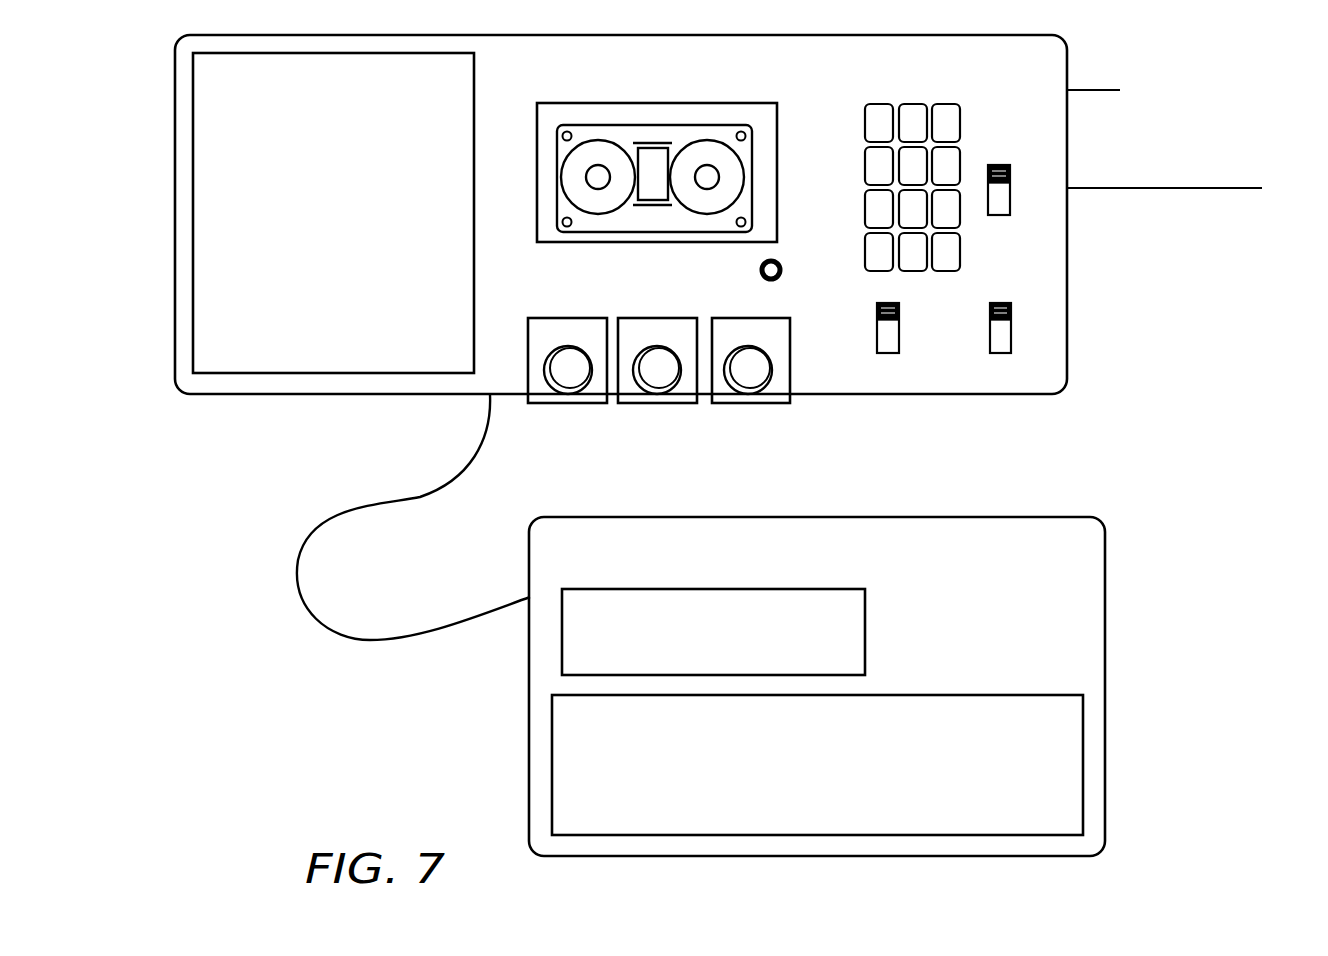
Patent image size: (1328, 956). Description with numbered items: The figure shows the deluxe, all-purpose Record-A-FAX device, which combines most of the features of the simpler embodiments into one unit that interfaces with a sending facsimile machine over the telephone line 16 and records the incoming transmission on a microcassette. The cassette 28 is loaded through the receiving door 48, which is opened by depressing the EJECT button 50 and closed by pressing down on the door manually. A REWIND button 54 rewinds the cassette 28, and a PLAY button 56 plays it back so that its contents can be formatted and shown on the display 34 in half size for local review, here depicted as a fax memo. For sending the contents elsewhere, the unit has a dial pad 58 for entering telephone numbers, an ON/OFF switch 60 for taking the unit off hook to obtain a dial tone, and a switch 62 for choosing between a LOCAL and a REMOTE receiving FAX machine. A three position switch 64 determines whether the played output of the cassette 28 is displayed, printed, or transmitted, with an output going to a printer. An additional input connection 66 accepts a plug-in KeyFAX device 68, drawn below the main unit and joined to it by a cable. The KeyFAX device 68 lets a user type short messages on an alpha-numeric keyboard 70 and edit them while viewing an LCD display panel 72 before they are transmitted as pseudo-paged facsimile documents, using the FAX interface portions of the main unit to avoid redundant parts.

The telephone line 16 is at (1100, 90).
The cassette 28 is at (748, 205).
The display 34 is at (307, 352).
The receiving door 48 is at (775, 152).
The EJECT button 50 is at (645, 395).
The REWIND button 54 is at (551, 398).
The PLAY button 56 is at (735, 395).
The dial pad 58 is at (970, 102).
The ON/OFF switch 60 is at (1010, 183).
The switch 62 is at (877, 318).
The three position switch 64 is at (1010, 318).
The input connection 66 is at (476, 403).
The KeyFAX device 68 is at (1140, 592).
The alpha-numeric keyboard 70 is at (1057, 745).
The LCD display panel 72 is at (865, 628).